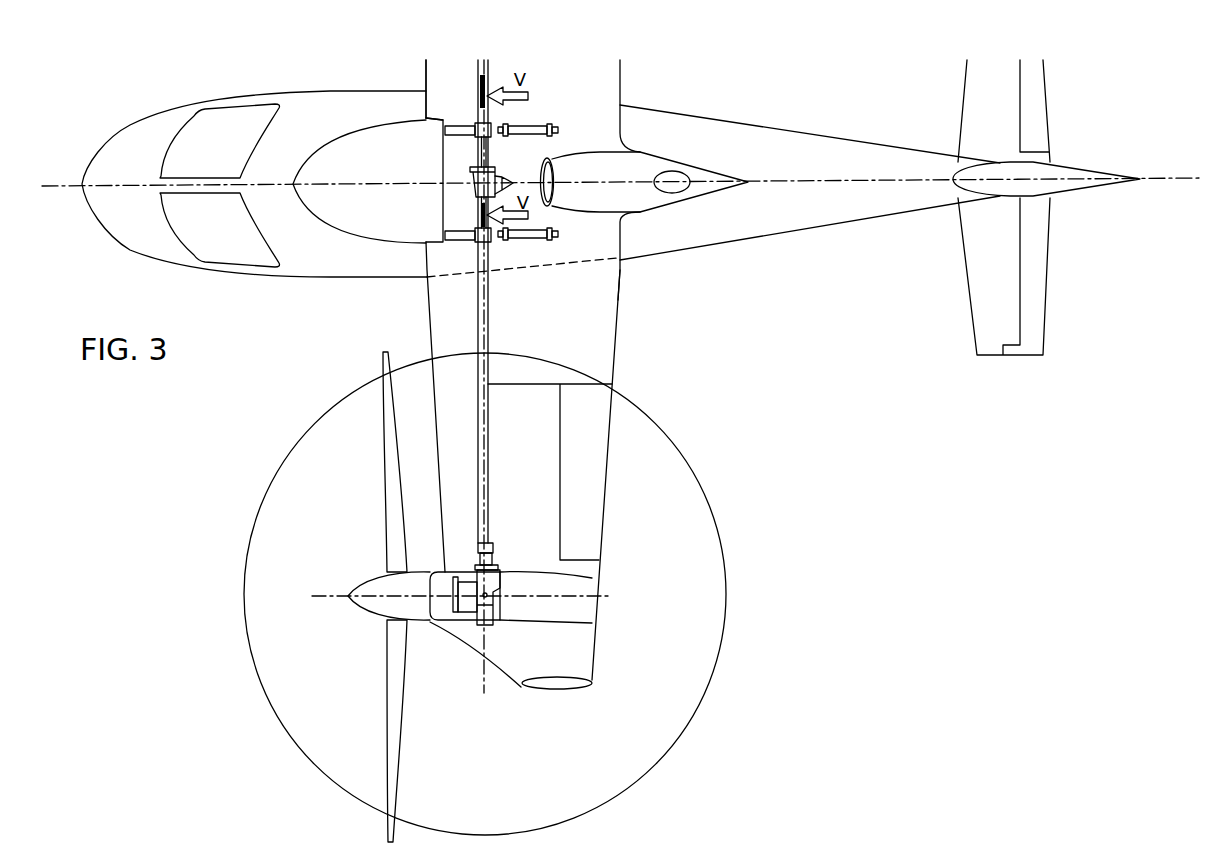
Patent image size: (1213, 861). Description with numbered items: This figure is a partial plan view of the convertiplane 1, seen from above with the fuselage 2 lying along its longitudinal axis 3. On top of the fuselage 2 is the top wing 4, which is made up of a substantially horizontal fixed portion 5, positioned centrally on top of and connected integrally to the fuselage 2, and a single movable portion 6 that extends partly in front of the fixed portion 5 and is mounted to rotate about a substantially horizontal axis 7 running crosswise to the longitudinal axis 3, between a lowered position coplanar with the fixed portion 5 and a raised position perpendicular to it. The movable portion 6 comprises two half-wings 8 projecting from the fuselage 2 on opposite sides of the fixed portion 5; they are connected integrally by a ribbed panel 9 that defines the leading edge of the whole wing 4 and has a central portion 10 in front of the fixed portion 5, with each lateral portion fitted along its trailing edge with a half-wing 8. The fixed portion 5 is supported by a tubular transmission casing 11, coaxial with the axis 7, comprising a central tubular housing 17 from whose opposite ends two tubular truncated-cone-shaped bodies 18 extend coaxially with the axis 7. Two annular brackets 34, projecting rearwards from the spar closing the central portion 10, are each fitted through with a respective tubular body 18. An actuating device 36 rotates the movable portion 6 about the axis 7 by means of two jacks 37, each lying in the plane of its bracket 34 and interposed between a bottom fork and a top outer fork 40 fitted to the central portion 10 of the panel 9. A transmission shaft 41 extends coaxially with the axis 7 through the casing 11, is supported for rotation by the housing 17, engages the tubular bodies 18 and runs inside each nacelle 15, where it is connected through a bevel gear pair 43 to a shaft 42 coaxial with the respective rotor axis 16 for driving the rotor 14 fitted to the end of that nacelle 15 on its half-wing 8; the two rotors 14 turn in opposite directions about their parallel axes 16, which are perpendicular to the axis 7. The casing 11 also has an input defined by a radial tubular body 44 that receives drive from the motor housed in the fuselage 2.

The convertiplane 1 is at (818, 330).
The fuselage 2 is at (697, 238).
The longitudinal axis 3 is at (1178, 182).
The top wing 4 is at (620, 350).
The fixed portion 5 is at (606, 298).
The movable portion 6 is at (412, 334).
The horizontal axis 7 is at (487, 663).
The half-wing 8 is at (550, 505).
The ribbed panel 9 is at (426, 74).
The central portion 10 is at (425, 296).
The tubular transmission casing 11 is at (467, 186).
The rotor 14 is at (363, 574).
The nacelle 15 is at (537, 612).
The rotor axis 16 is at (312, 596).
The central tubular housing 17 is at (468, 171).
The tubular truncated-cone-shaped body 18 is at (477, 155).
The annular bracket 34 is at (477, 124).
The actuating device 36 is at (548, 143).
The jack 37 is at (527, 124).
The top outer fork 40 is at (424, 118).
The transmission shaft 41 is at (490, 434).
The rotor drive shaft 42 is at (460, 622).
The bevel gear pair 43 is at (470, 588).
The radial tubular body 44 is at (498, 173).